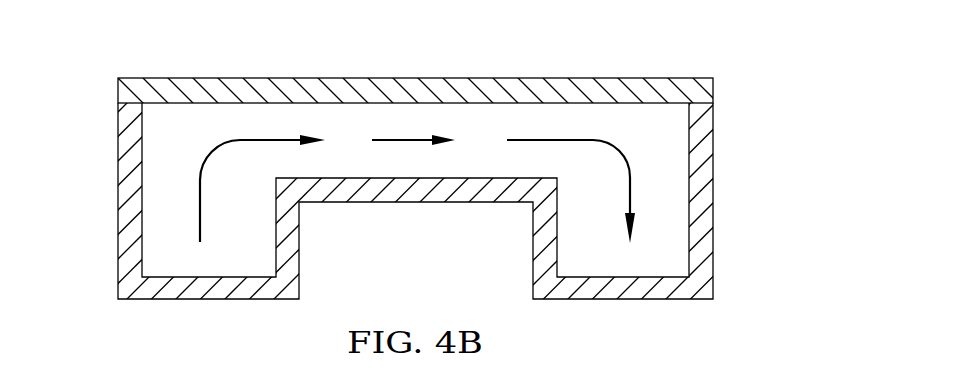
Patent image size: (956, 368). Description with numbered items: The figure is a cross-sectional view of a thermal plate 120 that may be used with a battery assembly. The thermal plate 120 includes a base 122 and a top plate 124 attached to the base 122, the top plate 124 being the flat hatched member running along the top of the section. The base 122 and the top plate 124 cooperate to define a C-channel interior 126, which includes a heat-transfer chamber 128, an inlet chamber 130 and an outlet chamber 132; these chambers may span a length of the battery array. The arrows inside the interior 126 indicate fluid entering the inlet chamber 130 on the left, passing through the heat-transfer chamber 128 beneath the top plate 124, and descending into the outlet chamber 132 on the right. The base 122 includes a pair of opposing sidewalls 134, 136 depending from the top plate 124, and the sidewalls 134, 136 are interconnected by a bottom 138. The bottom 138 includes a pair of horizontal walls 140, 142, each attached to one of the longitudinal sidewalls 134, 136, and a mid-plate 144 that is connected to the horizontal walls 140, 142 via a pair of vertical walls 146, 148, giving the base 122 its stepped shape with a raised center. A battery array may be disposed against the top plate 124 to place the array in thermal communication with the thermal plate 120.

The thermal plate 120 is at (766, 67).
The base 122 is at (477, 210).
The top plate 124 is at (240, 86).
The C-channel interior 126 is at (181, 124).
The heat-transfer chamber 128 is at (502, 136).
The inlet chamber 130 is at (253, 256).
The outlet chamber 132 is at (614, 256).
The sidewall 134 is at (129, 233).
The sidewall 136 is at (703, 159).
The bottom 138 is at (247, 289).
The horizontal wall 140 is at (170, 289).
The horizontal wall 142 is at (663, 290).
The mid-plate 144 is at (400, 190).
The vertical wall 146 is at (290, 262).
The vertical wall 148 is at (547, 262).